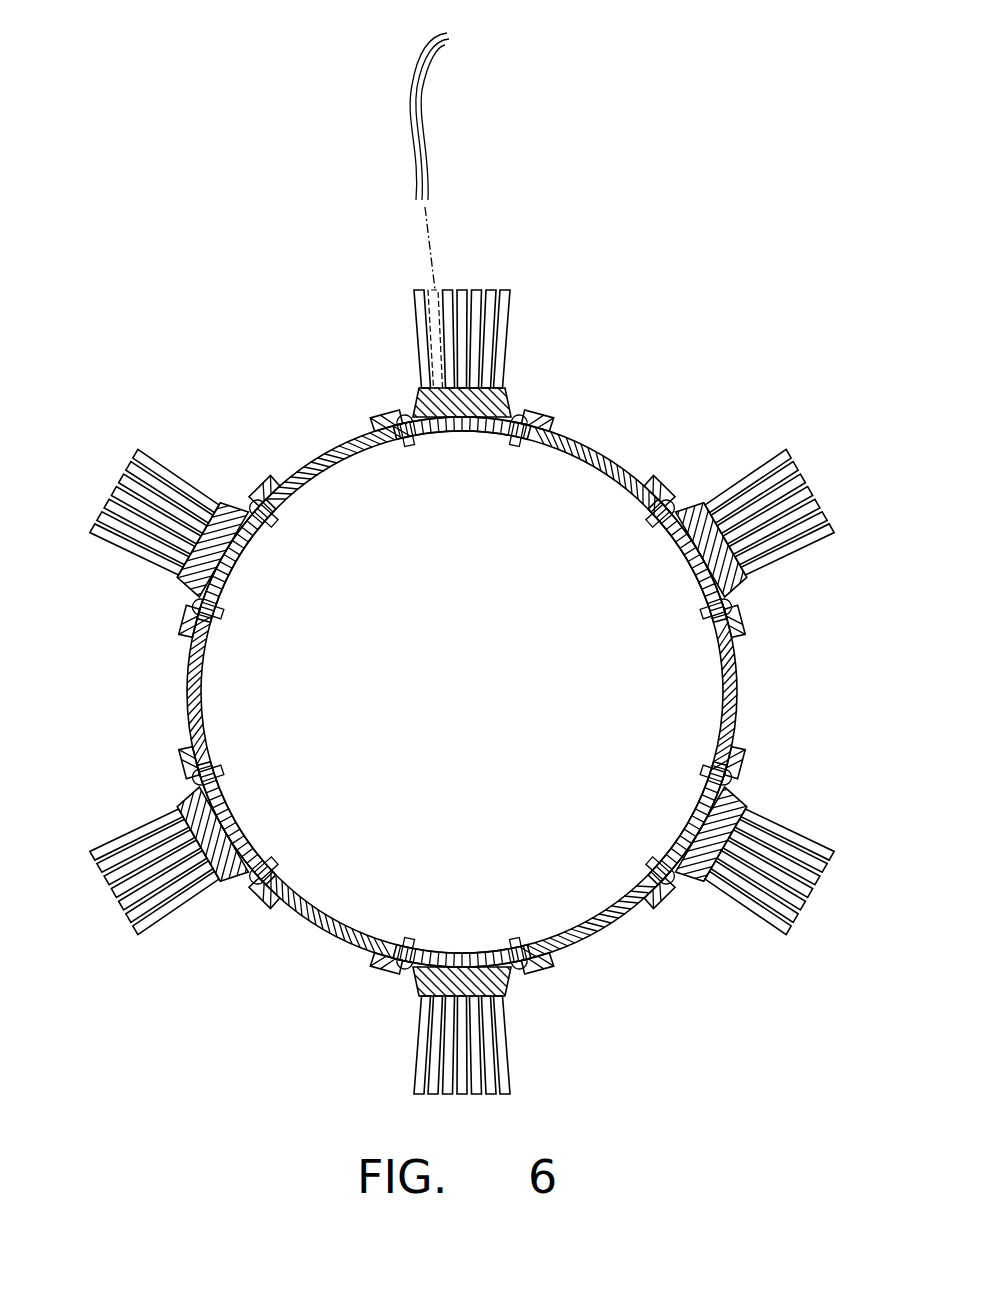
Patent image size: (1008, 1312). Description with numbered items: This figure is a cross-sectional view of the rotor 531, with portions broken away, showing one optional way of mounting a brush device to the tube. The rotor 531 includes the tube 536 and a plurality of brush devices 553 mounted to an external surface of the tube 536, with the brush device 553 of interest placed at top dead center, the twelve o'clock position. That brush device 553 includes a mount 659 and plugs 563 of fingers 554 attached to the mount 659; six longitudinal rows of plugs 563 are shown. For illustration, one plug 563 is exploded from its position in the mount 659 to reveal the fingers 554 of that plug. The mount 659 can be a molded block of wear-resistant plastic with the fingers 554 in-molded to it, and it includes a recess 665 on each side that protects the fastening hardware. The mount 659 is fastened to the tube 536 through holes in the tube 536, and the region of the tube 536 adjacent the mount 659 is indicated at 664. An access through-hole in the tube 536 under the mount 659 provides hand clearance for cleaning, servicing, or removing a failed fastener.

The rotor 531 is at (462, 562).
The tube 536 is at (300, 460).
The brush device 553 is at (458, 284).
The fingers 554 is at (450, 115).
The plugs 563 is at (490, 290).
The mount 659 is at (447, 413).
The bracket 664 is at (548, 431).
The recess 665 is at (507, 408).